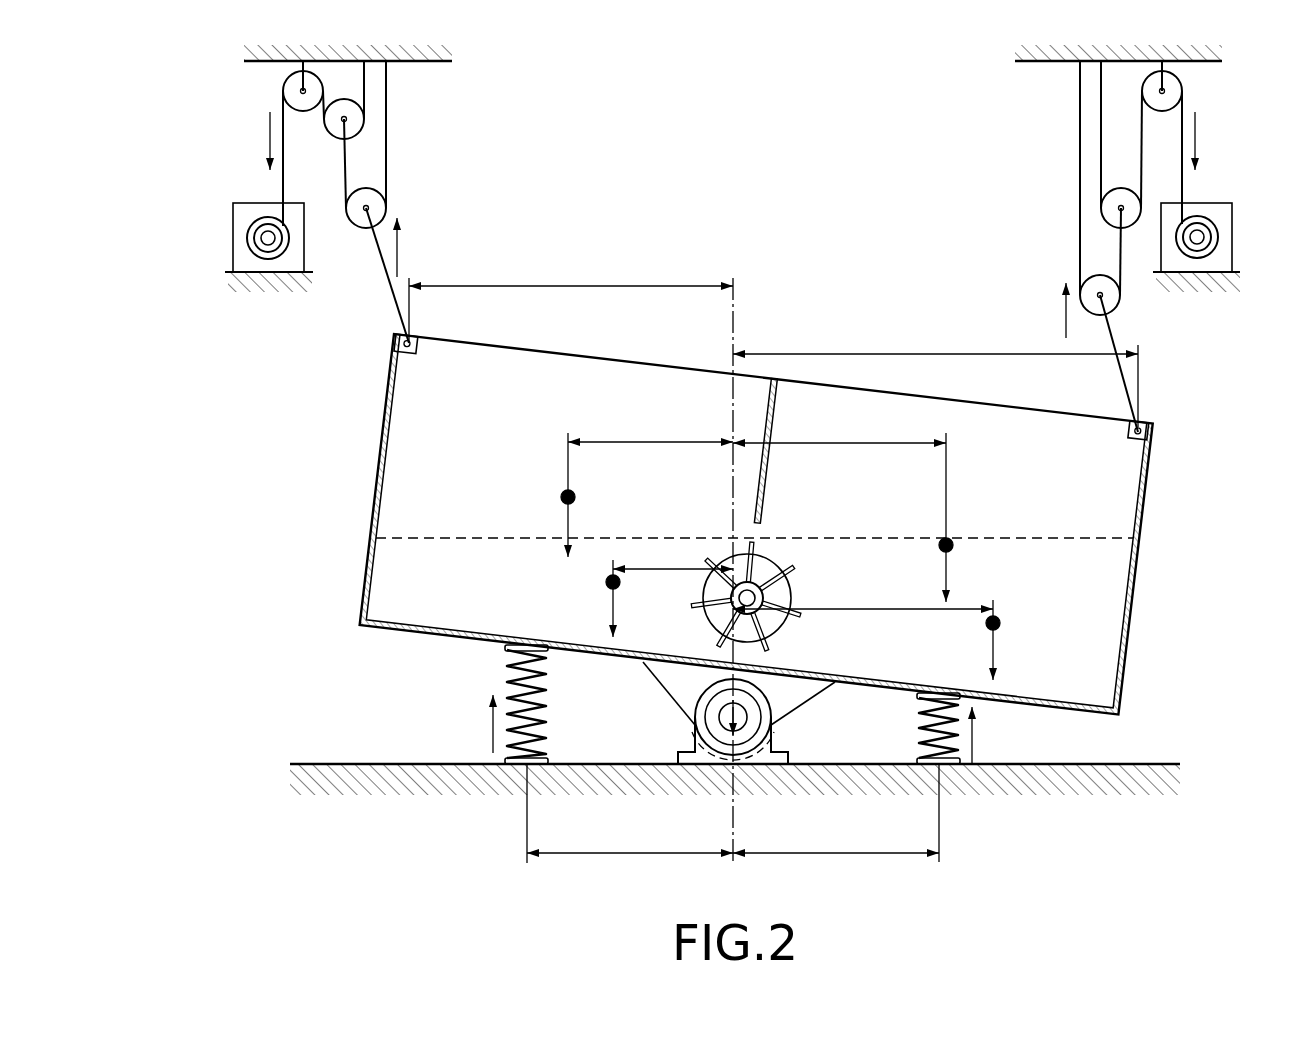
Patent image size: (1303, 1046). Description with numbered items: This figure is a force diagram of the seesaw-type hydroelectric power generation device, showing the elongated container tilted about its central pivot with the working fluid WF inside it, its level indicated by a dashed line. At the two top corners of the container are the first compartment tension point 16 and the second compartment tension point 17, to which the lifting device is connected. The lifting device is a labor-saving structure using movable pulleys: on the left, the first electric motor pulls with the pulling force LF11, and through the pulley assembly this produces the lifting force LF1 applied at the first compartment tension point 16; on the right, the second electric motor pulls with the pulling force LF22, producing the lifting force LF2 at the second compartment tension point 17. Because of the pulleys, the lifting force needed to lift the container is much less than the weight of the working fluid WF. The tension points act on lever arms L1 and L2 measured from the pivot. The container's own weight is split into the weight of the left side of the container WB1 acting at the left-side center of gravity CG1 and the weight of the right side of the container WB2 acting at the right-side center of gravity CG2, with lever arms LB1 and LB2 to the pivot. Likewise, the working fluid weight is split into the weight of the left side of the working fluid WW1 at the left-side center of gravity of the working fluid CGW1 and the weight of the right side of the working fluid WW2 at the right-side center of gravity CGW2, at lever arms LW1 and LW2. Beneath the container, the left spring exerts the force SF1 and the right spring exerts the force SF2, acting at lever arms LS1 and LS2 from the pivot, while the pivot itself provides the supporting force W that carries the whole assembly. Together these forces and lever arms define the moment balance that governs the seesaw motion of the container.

The first compartment tension point 16 is at (394, 337).
The second compartment tension point 17 is at (1158, 428).
The pulling force by the first electric motor LF11 is at (240, 141).
The lifting force exerted by the first pulley assembly LF1 is at (421, 247).
The pulling force by the second electric motor LF22 is at (1226, 141).
The lifting force exerted by the second pulley assembly LF2 is at (1039, 310).
The lever arm from the first compartment tension point to the pivot L1 is at (571, 299).
The lever arm from the second compartment tension point to the pivot L2 is at (935, 375).
The lever arm from the left-side center of gravity of the container to the pivot LB1 is at (650, 427).
The lever arm from the right-side center of gravity of the container to the pivot LB2 is at (839, 427).
The left-side center of gravity of the container CG1 is at (537, 498).
The right-side center of gravity of the container CG2 is at (974, 555).
The weight of the left side of the container WB1 is at (599, 495).
The weight of the right side of the container WB2 is at (914, 517).
The lever arm from the left-side center of gravity of the working fluid to the pivot LW1 is at (673, 555).
The lever arm from the right-side center of gravity of the working fluid to the pivo LW2 is at (863, 595).
The left-side center of gravity of the working fluid CGW1 is at (570, 582).
The right-side center of gravity of the working fluid CGW2 is at (1035, 630).
The weight of the left side of the working fluid WW1 is at (651, 601).
The weight of the right side of the working fluid WW2 is at (959, 642).
The working fluid WF is at (1078, 545).
The force exerted by the left spring SF1 is at (466, 724).
The force exerted by the right spring SF2 is at (996, 735).
The lever arm from the left spring to the pivot LS1 is at (630, 813).
The lever arm from the right spring to the pivot LS2 is at (836, 813).
The supporting force W is at (749, 733).